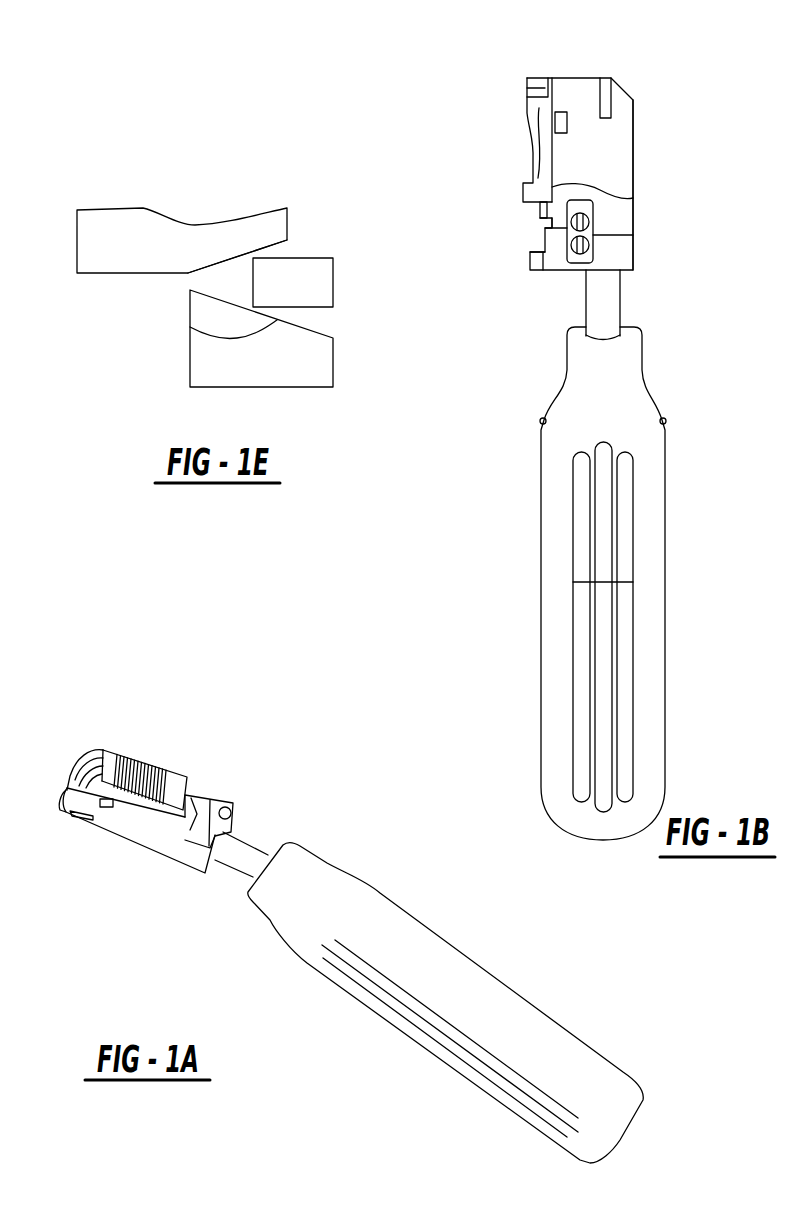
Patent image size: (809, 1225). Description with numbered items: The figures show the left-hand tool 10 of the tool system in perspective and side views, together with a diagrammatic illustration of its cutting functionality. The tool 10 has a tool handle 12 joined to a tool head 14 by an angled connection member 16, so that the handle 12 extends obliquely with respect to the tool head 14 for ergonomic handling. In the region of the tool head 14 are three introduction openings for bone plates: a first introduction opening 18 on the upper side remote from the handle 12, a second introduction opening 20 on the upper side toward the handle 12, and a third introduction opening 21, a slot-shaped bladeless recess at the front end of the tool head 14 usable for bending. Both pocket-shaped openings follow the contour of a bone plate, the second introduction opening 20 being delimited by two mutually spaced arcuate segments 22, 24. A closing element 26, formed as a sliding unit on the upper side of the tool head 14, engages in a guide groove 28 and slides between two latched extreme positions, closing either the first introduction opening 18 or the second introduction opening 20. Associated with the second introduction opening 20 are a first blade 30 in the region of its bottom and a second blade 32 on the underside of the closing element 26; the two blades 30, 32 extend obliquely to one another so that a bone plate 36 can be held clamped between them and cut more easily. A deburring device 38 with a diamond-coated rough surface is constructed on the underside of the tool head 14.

In FIG. 1B, the left-hand tool 10 is at (494, 499).
In FIG. 1A, the left-hand tool 10 is at (293, 688).
In FIG. 1B, the tool handle 12 is at (550, 643).
In FIG. 1A, the tool handle 12 is at (425, 947).
In FIG. 1B, the tool head 14 is at (597, 160).
In FIG. 1A, the tool head 14 is at (153, 840).
In FIG. 1B, the angled connection member 16 is at (603, 303).
In FIG. 1A, the angled connection member 16 is at (240, 848).
In FIG. 1B, the first introduction opening 18 is at (562, 127).
In FIG. 1A, the first introduction opening 18 is at (97, 795).
In FIG. 1B, the second introduction opening 20 is at (555, 232).
In FIG. 1A, the second introduction opening 20 is at (200, 813).
In FIG. 1B, the third introduction opening 21 is at (607, 98).
In FIG. 1A, the third introduction opening 21 is at (77, 813).
In FIG. 1B, the arcuate segment 22 is at (540, 218).
In FIG. 1B, the arcuate segment 24 is at (550, 252).
In FIG. 1E, the closing element 26 is at (115, 232).
In FIG. 1B, the closing element 26 is at (540, 153).
In FIG. 1A, the closing element 26 is at (147, 768).
In FIG. 1B, the guide groove 28 is at (548, 88).
In FIG. 1E, the first blade 30 is at (190, 327).
In FIG. 1B, the first blade 30 is at (633, 228).
In FIG. 1E, the second blade 32 is at (222, 262).
In FIG. 1B, the second blade 32 is at (613, 200).
In FIG. 1E, the bone plate 36 is at (318, 283).
In FIG. 1B, the deburring device 38 is at (635, 148).